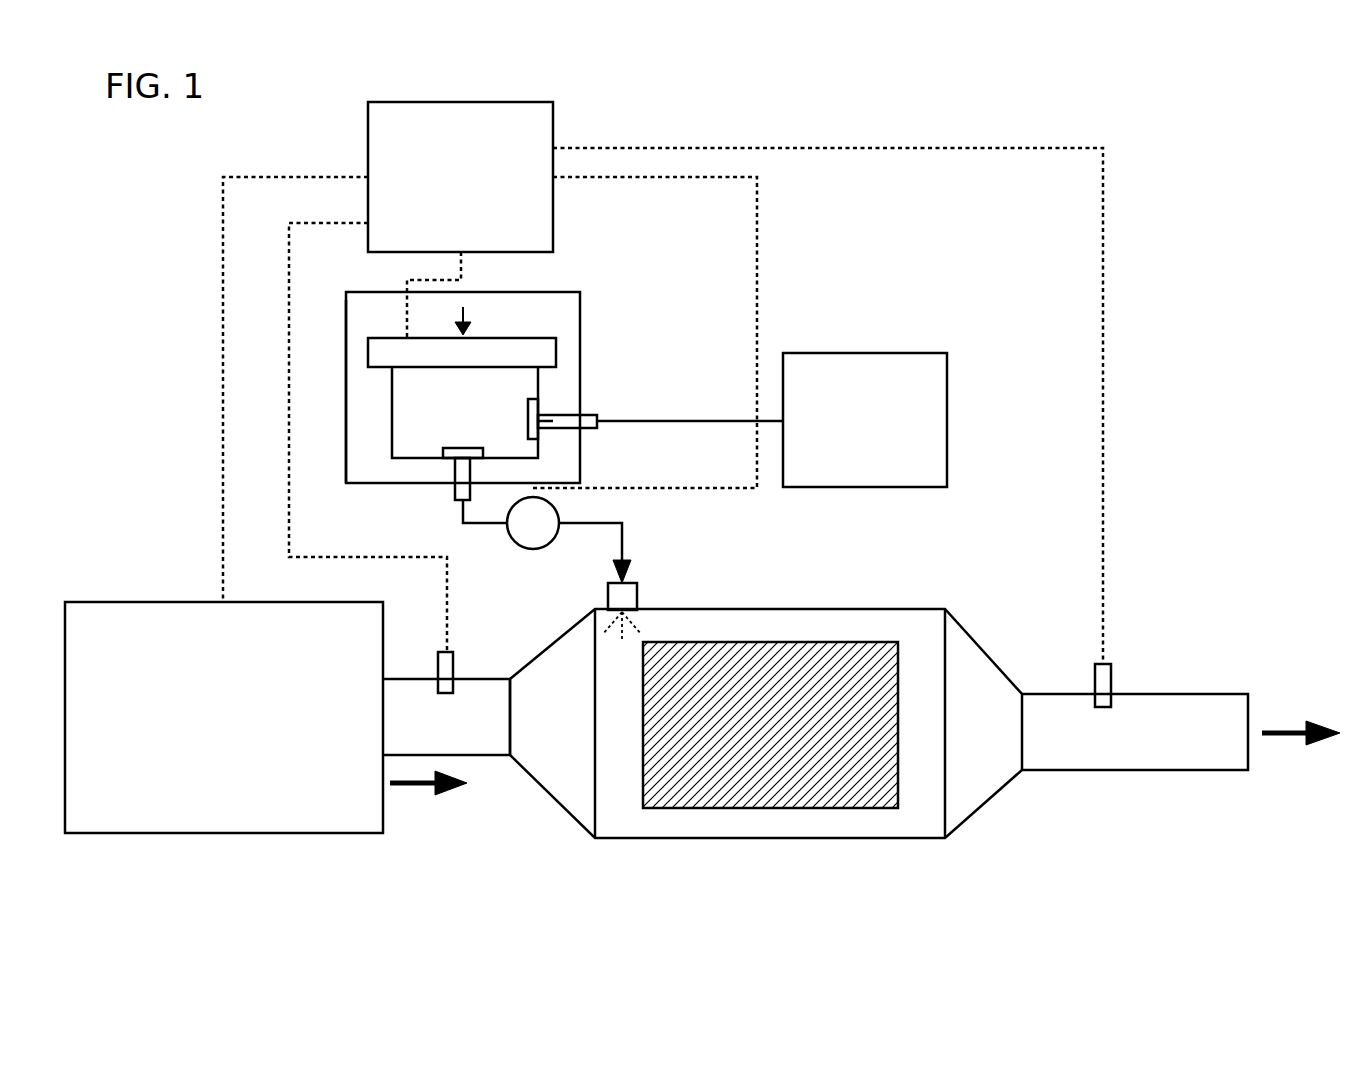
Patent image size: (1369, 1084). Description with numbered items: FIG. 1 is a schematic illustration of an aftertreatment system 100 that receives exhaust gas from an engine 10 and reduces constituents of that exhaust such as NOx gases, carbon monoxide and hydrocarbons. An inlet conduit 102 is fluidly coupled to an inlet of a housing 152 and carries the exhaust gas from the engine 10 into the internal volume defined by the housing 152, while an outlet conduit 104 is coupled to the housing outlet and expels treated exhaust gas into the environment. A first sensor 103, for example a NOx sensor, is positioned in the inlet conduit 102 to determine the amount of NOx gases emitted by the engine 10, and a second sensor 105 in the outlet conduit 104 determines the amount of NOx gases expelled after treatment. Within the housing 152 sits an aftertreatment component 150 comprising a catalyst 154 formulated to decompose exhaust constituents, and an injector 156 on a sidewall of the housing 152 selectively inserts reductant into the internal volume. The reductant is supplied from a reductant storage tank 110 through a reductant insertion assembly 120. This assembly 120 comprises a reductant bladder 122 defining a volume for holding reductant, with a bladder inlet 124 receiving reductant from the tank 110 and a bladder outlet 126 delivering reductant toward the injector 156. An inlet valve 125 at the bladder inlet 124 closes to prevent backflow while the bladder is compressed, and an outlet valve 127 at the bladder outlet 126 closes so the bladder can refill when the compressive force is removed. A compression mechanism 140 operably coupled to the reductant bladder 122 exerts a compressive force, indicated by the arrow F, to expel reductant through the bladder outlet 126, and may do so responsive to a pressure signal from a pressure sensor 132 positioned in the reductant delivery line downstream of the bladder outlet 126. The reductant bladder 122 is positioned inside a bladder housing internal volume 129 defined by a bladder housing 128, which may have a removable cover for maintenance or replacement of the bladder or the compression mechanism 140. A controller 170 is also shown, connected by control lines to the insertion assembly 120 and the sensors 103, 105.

The aftertreatment system 100 is at (937, 133).
The engine 10 is at (212, 742).
The inlet conduit 102 is at (495, 740).
The first sensor 103 is at (455, 666).
The outlet conduit 104 is at (1210, 770).
The second sensor 105 is at (1108, 681).
The reductant storage tank 110 is at (846, 477).
The reductant insertion assembly 120 is at (583, 292).
The reductant bladder 122 is at (517, 385).
The bladder inlet 124 is at (565, 420).
The inlet valve 125 is at (540, 433).
The bladder outlet 126 is at (452, 490).
The outlet valve 127 is at (445, 453).
The bladder housing 128 is at (347, 395).
The bladder housing internal volume 129 is at (355, 328).
The pressure sensor 132 is at (527, 540).
The compression mechanism 140 is at (540, 339).
The aftertreatment component 150 is at (730, 815).
The housing 152 is at (823, 838).
The catalyst 154 is at (860, 787).
The injector 156 is at (625, 597).
The controller 170 is at (441, 204).